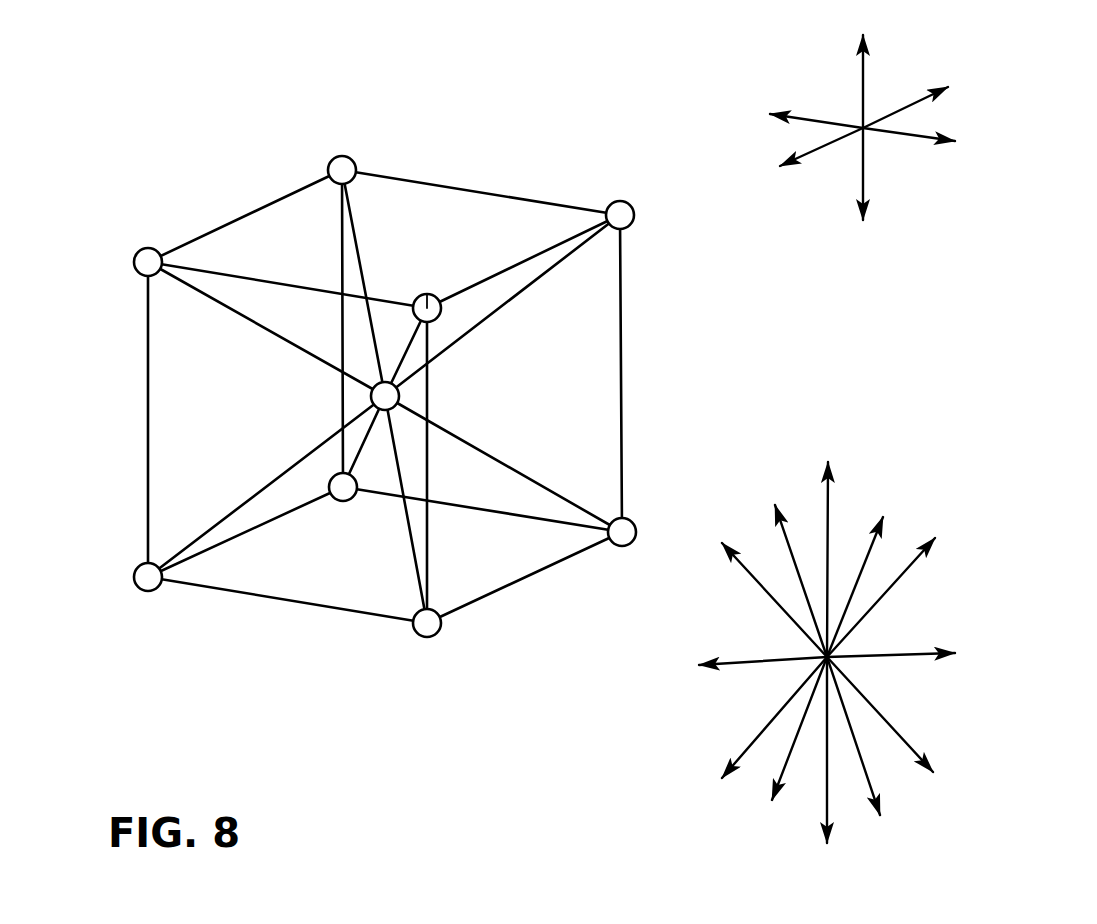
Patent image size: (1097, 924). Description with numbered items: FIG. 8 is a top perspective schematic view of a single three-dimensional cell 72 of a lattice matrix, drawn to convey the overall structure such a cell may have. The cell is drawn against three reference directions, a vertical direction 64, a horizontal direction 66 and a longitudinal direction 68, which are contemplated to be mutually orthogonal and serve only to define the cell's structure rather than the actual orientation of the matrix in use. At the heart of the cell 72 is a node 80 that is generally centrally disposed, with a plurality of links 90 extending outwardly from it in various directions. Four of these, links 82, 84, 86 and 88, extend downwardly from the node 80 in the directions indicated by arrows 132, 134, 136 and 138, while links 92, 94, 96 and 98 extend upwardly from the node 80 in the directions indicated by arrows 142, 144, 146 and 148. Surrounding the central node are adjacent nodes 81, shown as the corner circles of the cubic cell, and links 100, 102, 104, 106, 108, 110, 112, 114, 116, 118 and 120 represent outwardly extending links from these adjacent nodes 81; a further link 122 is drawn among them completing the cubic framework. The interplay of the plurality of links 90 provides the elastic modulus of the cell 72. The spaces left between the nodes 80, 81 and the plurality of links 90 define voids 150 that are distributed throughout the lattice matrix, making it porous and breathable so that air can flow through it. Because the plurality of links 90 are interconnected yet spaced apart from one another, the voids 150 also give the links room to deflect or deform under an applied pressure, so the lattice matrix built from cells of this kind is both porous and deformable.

The vertical direction 64 is at (862, 70).
The horizontal direction 66 is at (813, 117).
The longitudinal direction 68 is at (907, 100).
The 3D cell 72 is at (163, 156).
The node 80 is at (371, 399).
The adjacent nodes 81 is at (128, 261).
The link 82 is at (227, 517).
The link 84 is at (412, 550).
The link 86 is at (547, 492).
The link 88 is at (368, 457).
The plurality of links 90 is at (505, 402).
The link 92 is at (552, 262).
The link 94 is at (353, 230).
The link 96 is at (233, 307).
The link 98 is at (427, 308).
The link 100 is at (180, 243).
The link 102 is at (147, 310).
The link 104 is at (203, 585).
The link 106 is at (502, 590).
The link 108 is at (623, 368).
The link 110 is at (407, 337).
The link 112 is at (337, 247).
The link 114 is at (270, 520).
The link 116 is at (492, 508).
The link 118 is at (270, 280).
The link 120 is at (502, 267).
The strut 122 is at (432, 480).
The arrow 132 is at (747, 740).
The arrow 134 is at (870, 770).
The arrow 136 is at (877, 708).
The arrow 138 is at (787, 763).
The arrow 142 is at (902, 573).
The arrow 144 is at (788, 530).
The arrow 146 is at (747, 567).
The arrow 148 is at (863, 557).
The voids 150 is at (234, 353).